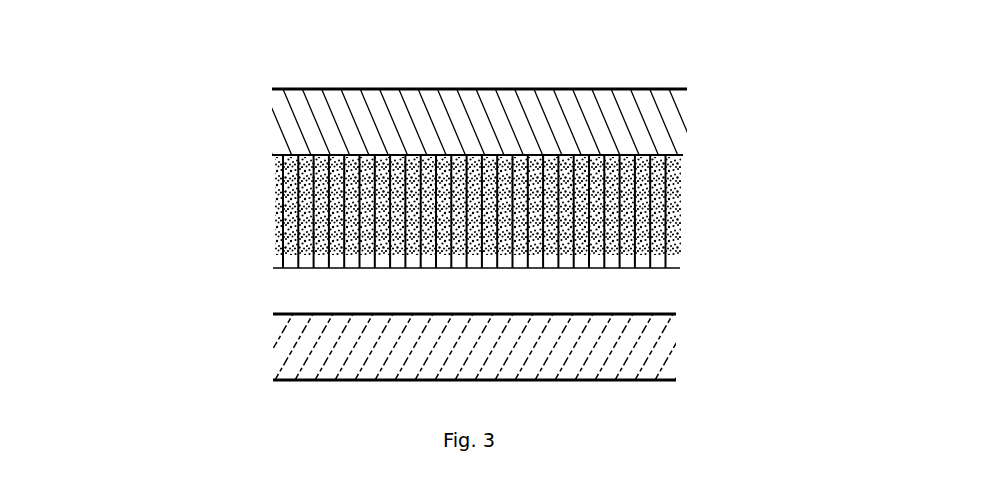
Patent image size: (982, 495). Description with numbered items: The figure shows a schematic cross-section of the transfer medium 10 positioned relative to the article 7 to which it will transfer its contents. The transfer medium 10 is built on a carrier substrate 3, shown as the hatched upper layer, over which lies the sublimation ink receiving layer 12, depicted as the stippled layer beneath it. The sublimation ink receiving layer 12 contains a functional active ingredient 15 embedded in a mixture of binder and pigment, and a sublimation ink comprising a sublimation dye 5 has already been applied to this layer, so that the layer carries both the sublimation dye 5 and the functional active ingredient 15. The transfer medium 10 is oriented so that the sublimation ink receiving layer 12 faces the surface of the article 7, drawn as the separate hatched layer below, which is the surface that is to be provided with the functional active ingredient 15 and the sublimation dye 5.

The transfer medium 10 is at (220, 113).
The carrier substrate 3 is at (653, 129).
The sublimation dye 5 is at (692, 199).
The functional active ingredient 15 is at (692, 264).
The sublimation ink receiving layer 12 is at (280, 213).
The article 7 is at (776, 336).